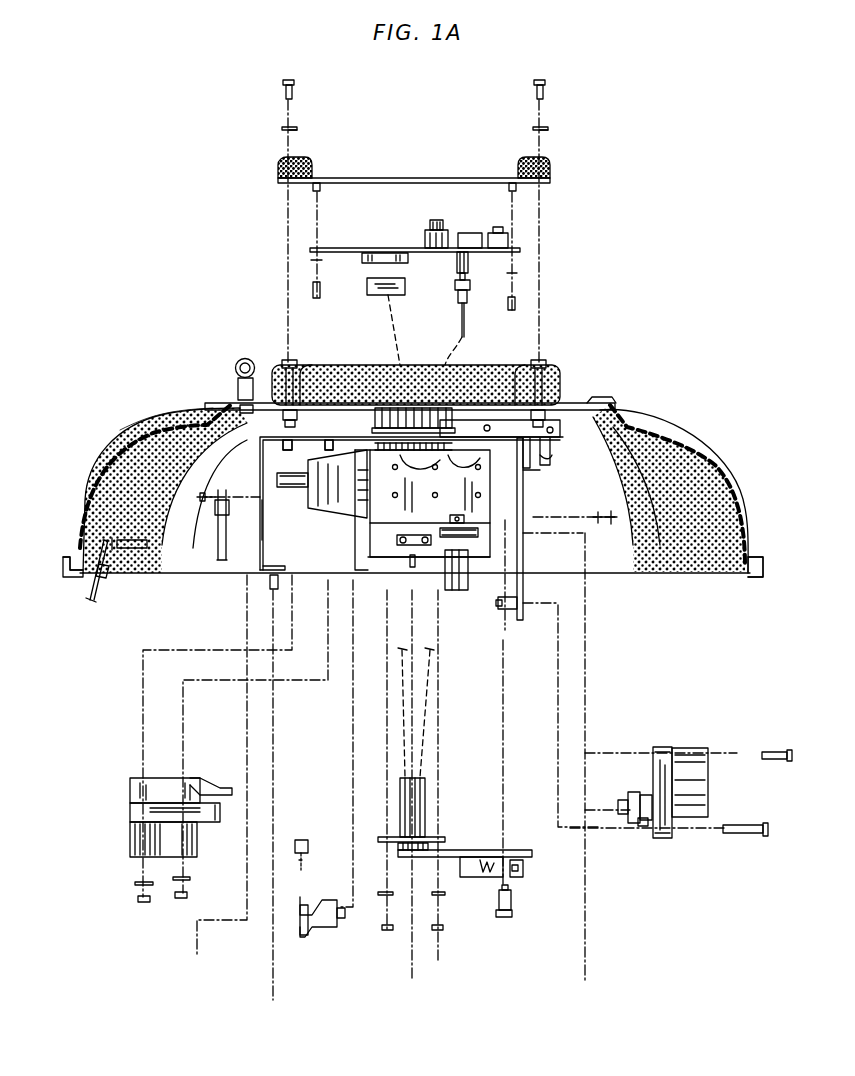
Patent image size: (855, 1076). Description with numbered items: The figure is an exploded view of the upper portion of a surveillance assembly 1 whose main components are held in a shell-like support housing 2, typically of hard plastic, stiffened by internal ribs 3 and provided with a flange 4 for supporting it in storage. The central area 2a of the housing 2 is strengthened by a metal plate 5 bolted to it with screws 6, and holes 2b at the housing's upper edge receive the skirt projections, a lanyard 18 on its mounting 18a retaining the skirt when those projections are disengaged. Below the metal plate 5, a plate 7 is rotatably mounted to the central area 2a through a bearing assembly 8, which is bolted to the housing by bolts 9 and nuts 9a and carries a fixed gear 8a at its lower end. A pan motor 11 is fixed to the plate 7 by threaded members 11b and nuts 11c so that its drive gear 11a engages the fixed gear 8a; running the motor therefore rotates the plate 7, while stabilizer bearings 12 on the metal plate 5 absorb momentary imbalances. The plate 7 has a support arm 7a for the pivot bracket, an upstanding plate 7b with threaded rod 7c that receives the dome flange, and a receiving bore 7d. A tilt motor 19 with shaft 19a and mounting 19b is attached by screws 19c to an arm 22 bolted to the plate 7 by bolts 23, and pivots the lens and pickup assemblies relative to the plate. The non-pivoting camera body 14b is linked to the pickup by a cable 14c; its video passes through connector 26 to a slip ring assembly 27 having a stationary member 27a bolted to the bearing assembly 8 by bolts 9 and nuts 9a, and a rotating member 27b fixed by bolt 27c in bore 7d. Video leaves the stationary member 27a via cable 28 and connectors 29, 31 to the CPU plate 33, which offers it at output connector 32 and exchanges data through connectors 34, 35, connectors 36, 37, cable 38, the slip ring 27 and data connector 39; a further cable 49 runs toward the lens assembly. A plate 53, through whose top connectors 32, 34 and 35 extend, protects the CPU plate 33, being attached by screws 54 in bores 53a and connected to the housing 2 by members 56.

The surveillance assembly 1 is at (727, 363).
The support housing 2 is at (722, 452).
The central area 2a is at (483, 400).
The holes 2b is at (73, 557).
The internal ribs 3 is at (183, 470).
The flange 4 is at (286, 365).
The metal plate 5 is at (600, 397).
The screws 6 is at (612, 403).
The plate 7 is at (310, 433).
The support arm 7a is at (262, 537).
The upstanding plate 7b is at (377, 557).
The threaded rod 7c is at (412, 560).
The receiving bore 7d is at (525, 480).
The bearing assembly 8 is at (375, 417).
The fixed gear 8a is at (450, 453).
The bolts 9 is at (425, 457).
The nuts 9a is at (437, 932).
The pan motor 11 is at (130, 838).
The drive gear 11a is at (220, 785).
The threaded members 11b is at (327, 448).
The nuts 11c is at (180, 899).
The stabilizer bearings 12 is at (272, 373).
The camera body 14b is at (547, 510).
The cable 14c is at (300, 487).
The lanyard 18 is at (90, 587).
The mounting 18a is at (127, 533).
The tilt motor 19 is at (700, 785).
The shaft 19a is at (632, 798).
The mounting 19b is at (642, 825).
The screws 19c is at (790, 760).
The arm 22 is at (524, 560).
The bolts 23 is at (548, 456).
The connector 26 is at (524, 870).
The slip ring assembly 27 is at (445, 826).
The stationary member 27a is at (415, 797).
The rotating member 27b is at (480, 850).
The bolt 27c is at (505, 918).
The cable 28 is at (447, 350).
The connector 29 is at (470, 292).
The connector 31 is at (459, 270).
The output connector 32 is at (497, 232).
The CPU plate 33 is at (338, 248).
The connector 34 is at (430, 235).
The connector 35 is at (468, 233).
The connector 36 is at (366, 260).
The connector 37 is at (370, 293).
The cable 38 is at (398, 312).
The data connector 39 is at (478, 878).
The cable 49 is at (460, 590).
The plate 53 is at (404, 178).
The bores 53a is at (322, 188).
The screws 54 is at (312, 292).
The members 56 is at (297, 88).